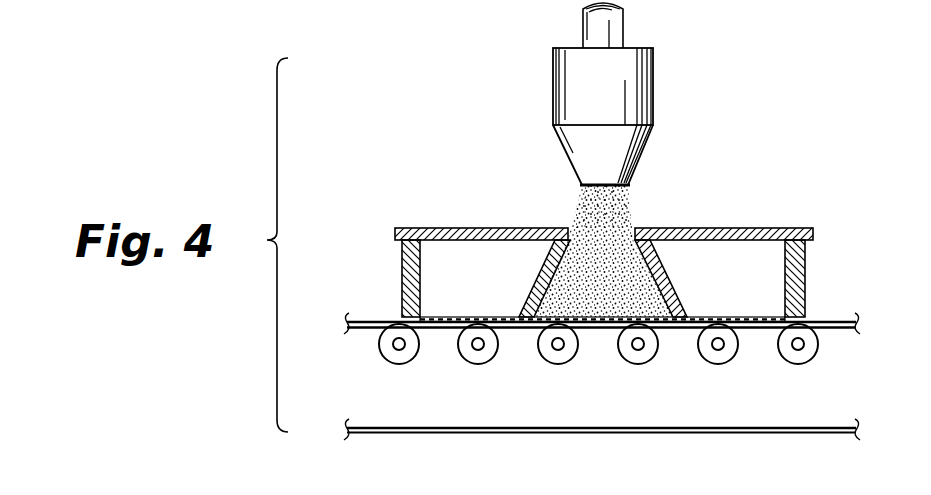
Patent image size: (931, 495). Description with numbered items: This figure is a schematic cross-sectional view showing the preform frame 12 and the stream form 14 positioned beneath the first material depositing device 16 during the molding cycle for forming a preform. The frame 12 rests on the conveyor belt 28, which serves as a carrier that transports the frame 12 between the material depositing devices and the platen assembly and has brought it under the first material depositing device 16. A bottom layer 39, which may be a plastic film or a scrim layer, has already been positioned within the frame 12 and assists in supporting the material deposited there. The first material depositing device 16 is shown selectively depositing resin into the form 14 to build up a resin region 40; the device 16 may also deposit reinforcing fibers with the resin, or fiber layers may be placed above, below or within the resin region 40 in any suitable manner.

The preform frame 12 is at (401, 267).
The stream form 14 is at (497, 228).
The first material depositing device 16 is at (553, 95).
The conveyor belt 28 is at (372, 426).
The bottom layer 39 is at (735, 322).
The resin region 40 is at (667, 242).